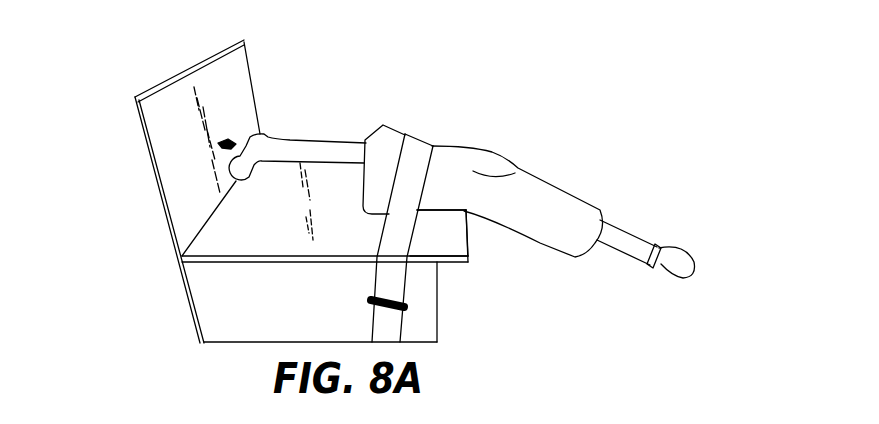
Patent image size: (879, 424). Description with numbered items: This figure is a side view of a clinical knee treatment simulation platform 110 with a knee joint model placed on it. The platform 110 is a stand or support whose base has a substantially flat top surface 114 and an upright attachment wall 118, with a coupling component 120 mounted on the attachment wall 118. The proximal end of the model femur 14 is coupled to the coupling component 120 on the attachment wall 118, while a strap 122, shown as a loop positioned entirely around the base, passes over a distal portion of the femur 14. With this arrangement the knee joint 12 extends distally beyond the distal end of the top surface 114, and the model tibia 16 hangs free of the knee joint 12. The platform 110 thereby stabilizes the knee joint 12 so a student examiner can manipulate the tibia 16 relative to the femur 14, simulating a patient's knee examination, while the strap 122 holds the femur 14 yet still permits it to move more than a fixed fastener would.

The knee joint 12 is at (485, 115).
The model femur 14 is at (307, 150).
The model tibia 16 is at (633, 242).
The platform 110 is at (146, 303).
The top surface 114 is at (442, 240).
The attachment wall 118 is at (165, 127).
The coupling component 120 is at (230, 140).
The strap 122 is at (390, 277).